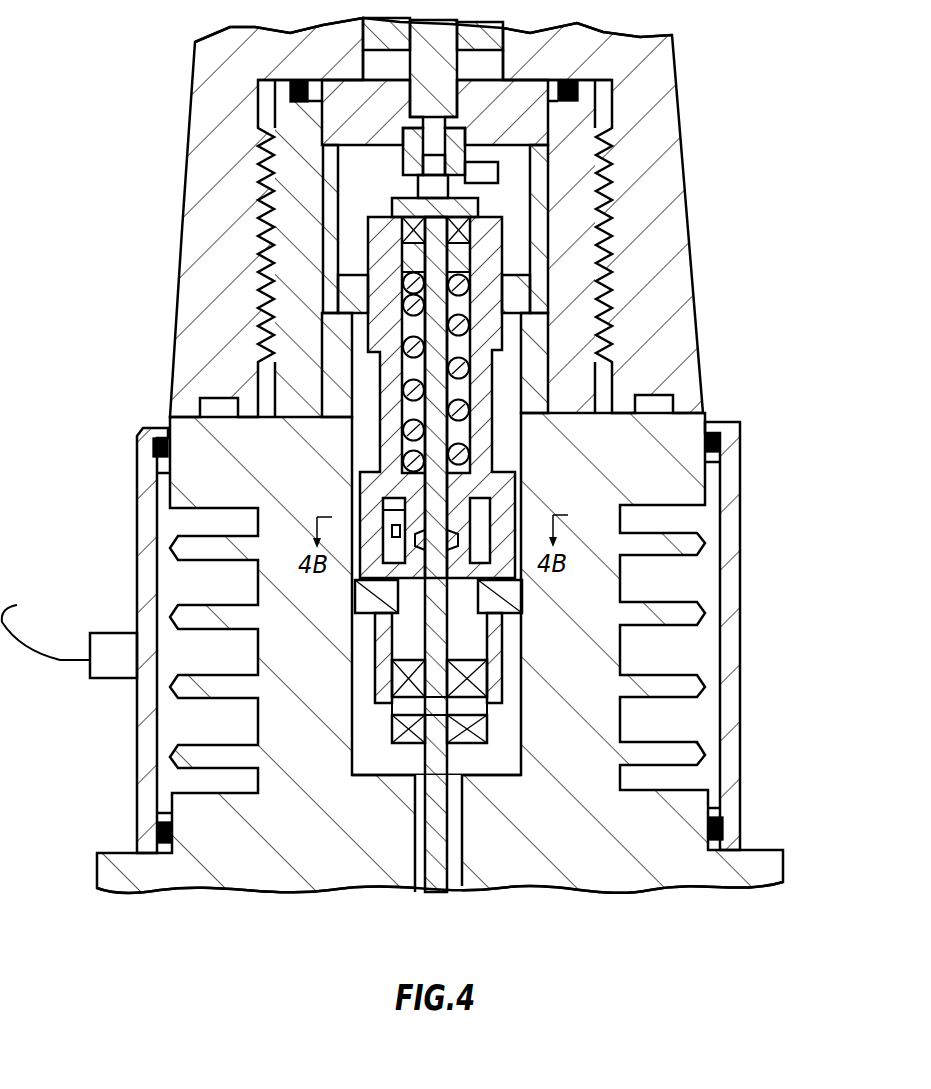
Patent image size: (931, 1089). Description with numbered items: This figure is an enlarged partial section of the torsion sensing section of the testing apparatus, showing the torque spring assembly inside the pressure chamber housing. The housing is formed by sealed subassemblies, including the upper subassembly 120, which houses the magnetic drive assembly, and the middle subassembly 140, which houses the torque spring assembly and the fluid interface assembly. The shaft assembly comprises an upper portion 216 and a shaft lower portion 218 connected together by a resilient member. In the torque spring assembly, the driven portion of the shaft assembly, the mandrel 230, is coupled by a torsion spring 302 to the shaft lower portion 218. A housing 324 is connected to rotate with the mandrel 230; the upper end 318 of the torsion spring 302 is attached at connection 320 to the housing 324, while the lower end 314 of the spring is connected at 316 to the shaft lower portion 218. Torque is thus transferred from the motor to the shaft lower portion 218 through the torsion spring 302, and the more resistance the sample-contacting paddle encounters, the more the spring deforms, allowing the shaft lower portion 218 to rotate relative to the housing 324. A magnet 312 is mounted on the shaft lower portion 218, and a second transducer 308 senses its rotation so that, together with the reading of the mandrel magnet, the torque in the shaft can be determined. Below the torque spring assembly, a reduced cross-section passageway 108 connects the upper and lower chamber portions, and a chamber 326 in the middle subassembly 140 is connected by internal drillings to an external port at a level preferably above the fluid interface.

The passageway 108 is at (457, 845).
The upper subassembly 120 is at (645, 90).
The middle subassembly 140 is at (665, 426).
The upper portion 216 is at (365, 42).
The shaft lower portion 218 is at (437, 633).
The mandrel 230 is at (492, 37).
The torsion spring 302 is at (468, 370).
The second transducer 308 is at (100, 680).
The magnet 312 is at (402, 678).
The lower end 314 is at (413, 480).
The connection 316 is at (487, 447).
The upper end 318 is at (472, 292).
The connection 320 is at (415, 276).
The housing 324 is at (365, 232).
The chamber 326 is at (505, 735).